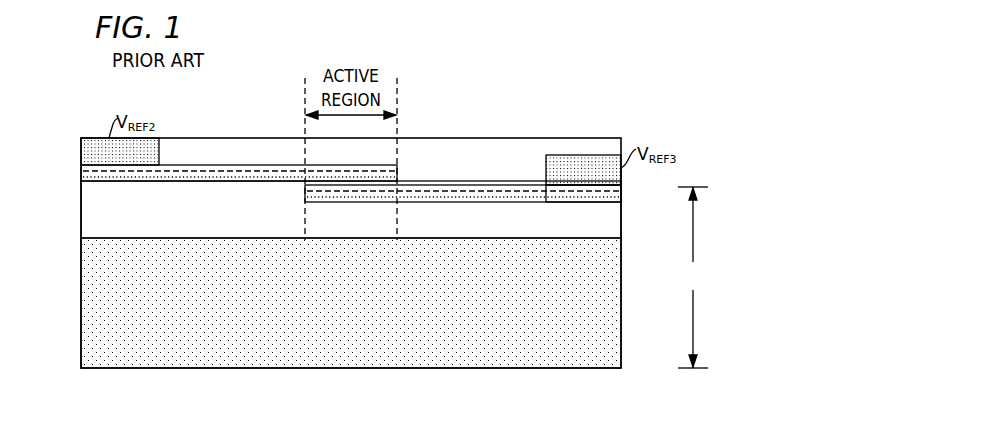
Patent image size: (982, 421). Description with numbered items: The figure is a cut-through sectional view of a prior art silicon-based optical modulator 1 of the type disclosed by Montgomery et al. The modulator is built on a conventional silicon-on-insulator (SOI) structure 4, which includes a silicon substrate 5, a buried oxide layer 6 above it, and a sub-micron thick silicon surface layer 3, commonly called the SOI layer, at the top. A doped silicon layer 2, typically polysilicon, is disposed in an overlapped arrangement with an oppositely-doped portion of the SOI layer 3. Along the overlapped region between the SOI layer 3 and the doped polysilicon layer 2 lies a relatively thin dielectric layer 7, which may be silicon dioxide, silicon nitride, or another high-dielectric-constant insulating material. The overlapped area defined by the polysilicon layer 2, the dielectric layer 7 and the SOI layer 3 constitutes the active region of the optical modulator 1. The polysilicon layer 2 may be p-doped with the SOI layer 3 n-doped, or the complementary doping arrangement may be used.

The silicon-based optical modulator 1 is at (598, 97).
The doped silicon layer 2 is at (218, 165).
The silicon surface layer 3 is at (621, 194).
The silicon-on-insulator structure 4 is at (693, 277).
The silicon substrate 5 is at (92, 296).
The buried oxide layer 6 is at (90, 205).
The dielectric layer 7 is at (397, 185).